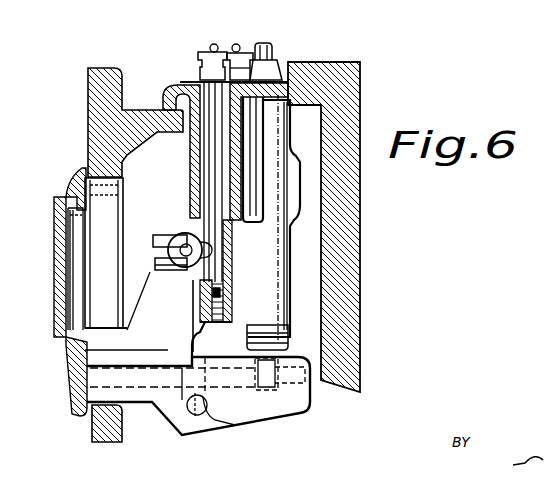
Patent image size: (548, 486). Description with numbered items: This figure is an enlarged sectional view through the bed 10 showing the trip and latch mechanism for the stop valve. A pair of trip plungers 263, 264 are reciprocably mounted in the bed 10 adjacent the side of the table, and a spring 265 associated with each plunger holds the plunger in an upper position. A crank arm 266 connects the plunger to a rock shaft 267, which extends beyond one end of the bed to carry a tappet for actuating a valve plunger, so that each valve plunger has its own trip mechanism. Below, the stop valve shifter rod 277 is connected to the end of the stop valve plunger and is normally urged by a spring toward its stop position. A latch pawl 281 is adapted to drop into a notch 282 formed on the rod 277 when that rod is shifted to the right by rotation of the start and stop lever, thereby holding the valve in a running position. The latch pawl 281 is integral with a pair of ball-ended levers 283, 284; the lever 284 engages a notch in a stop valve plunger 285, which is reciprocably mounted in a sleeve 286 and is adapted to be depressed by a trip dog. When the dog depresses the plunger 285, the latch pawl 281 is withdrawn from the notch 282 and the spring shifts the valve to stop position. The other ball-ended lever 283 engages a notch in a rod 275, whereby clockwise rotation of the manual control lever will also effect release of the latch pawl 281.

The bed 10 is at (88, 103).
The trip plunger 263 is at (217, 45).
The trip plunger 264 is at (239, 46).
The stop valve plunger 285 is at (281, 58).
The crank arm 266 is at (183, 229).
The rock shaft 267 is at (183, 246).
The spring 265 is at (192, 310).
The ball-ended lever 283 is at (178, 356).
The rod 275 is at (197, 333).
The sleeve 286 is at (273, 293).
The latch pawl 281 is at (172, 420).
The notch 282 is at (192, 418).
The stop valve shifter rod 277 is at (208, 433).
The ball-ended lever 284 is at (262, 392).